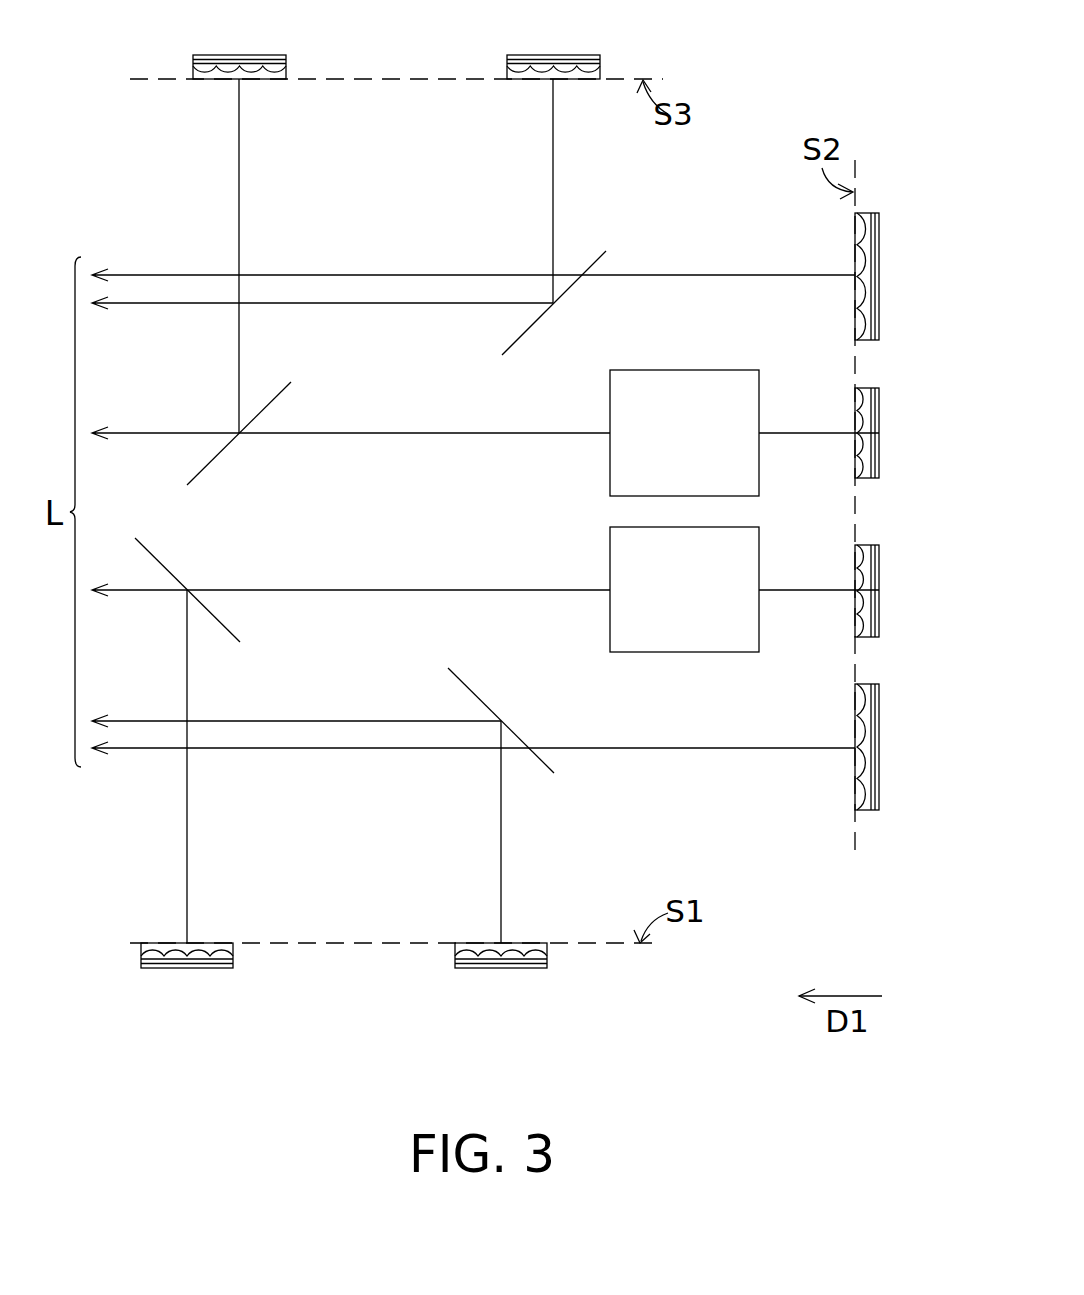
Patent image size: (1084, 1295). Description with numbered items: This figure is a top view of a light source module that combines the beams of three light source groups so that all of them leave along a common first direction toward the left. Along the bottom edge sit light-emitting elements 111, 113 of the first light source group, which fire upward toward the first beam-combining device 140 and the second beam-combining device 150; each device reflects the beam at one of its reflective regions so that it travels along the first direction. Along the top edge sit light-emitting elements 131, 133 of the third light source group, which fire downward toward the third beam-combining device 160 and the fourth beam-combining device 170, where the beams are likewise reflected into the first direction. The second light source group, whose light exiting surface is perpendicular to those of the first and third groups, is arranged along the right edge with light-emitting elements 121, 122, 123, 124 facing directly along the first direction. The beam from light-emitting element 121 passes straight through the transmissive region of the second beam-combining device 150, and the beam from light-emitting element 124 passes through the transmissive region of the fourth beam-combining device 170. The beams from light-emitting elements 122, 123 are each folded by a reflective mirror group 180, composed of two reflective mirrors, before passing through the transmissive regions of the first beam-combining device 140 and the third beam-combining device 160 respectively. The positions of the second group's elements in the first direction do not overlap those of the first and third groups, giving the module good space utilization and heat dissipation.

The light-emitting element 111 is at (213, 962).
The light-emitting element 113 is at (530, 962).
The light-emitting element 121 is at (873, 740).
The light-emitting element 122 is at (873, 617).
The light-emitting element 123 is at (873, 408).
The light-emitting element 124 is at (873, 272).
The light-emitting element 131 is at (265, 62).
The light-emitting element 133 is at (579, 62).
The first beam-combining device 140 is at (222, 630).
The second beam-combining device 150 is at (488, 705).
The third beam-combining device 160 is at (224, 452).
The fourth beam-combining device 170 is at (540, 320).
The reflective mirror group 180 is at (690, 382).